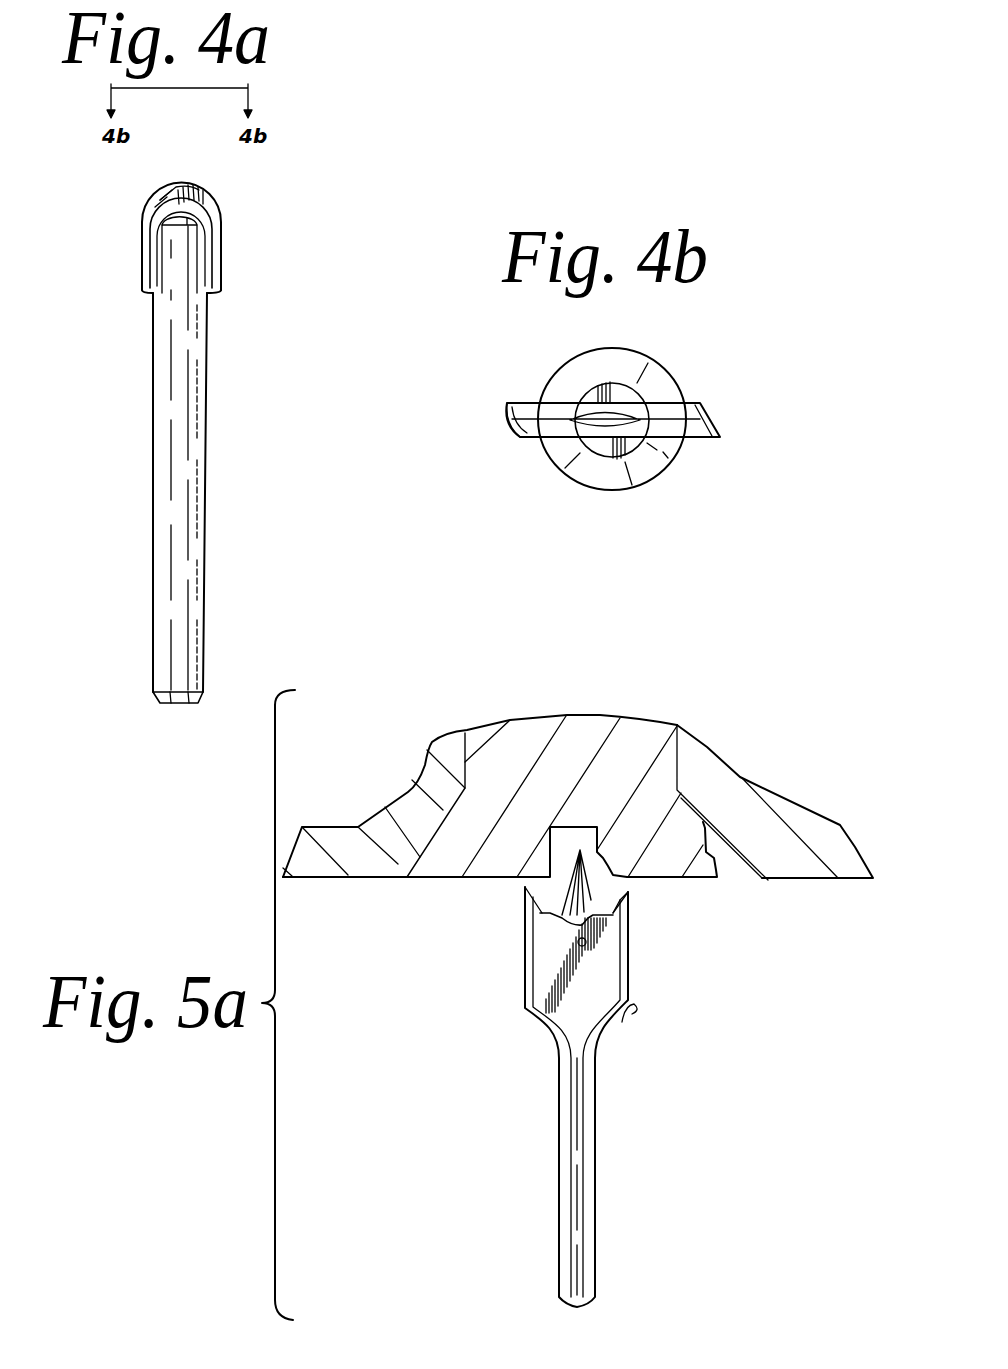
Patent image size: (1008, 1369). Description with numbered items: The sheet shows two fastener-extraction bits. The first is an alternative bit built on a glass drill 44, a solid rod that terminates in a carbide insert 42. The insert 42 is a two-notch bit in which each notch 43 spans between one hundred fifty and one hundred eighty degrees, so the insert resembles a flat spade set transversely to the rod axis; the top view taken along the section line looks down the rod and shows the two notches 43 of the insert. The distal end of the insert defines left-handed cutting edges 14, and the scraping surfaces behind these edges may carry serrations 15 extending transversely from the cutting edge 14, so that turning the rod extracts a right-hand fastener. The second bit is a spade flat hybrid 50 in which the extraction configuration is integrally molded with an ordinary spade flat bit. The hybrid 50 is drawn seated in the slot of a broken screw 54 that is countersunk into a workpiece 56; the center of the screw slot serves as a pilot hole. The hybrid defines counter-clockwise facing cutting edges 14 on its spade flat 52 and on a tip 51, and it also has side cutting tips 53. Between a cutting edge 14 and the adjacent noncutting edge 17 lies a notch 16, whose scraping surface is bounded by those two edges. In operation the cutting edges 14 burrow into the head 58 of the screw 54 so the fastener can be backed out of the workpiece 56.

In FIG. 4a, the cutting edge 14 is at (141, 265).
In FIG. 4b, the cutting edge 14 is at (507, 403).
In FIG. 5a, the cutting edge 14 is at (630, 963).
In FIG. 4a, the serrations 15 is at (165, 193).
In FIG. 4b, the serrations 15 is at (505, 413).
In FIG. 5a, the longitudinally extending notch 16 is at (582, 1278).
In FIG. 5a, the noncutting edge 17 is at (622, 1022).
In FIG. 4a, the carbide insert 42 is at (221, 265).
In FIG. 4b, the notch 43 is at (631, 395).
In FIG. 4a, the glass drill 44 is at (118, 555).
In FIG. 5a, the spade flat hybrid 50 is at (683, 1105).
In FIG. 5a, the tip 51 is at (576, 860).
In FIG. 5a, the spade flat 52 is at (553, 965).
In FIG. 5a, the side cutting tip 53 is at (629, 893).
In FIG. 5a, the broken screw 54 is at (591, 802).
In FIG. 5a, the workpiece 56 is at (758, 819).
In FIG. 5a, the head 58 is at (423, 877).